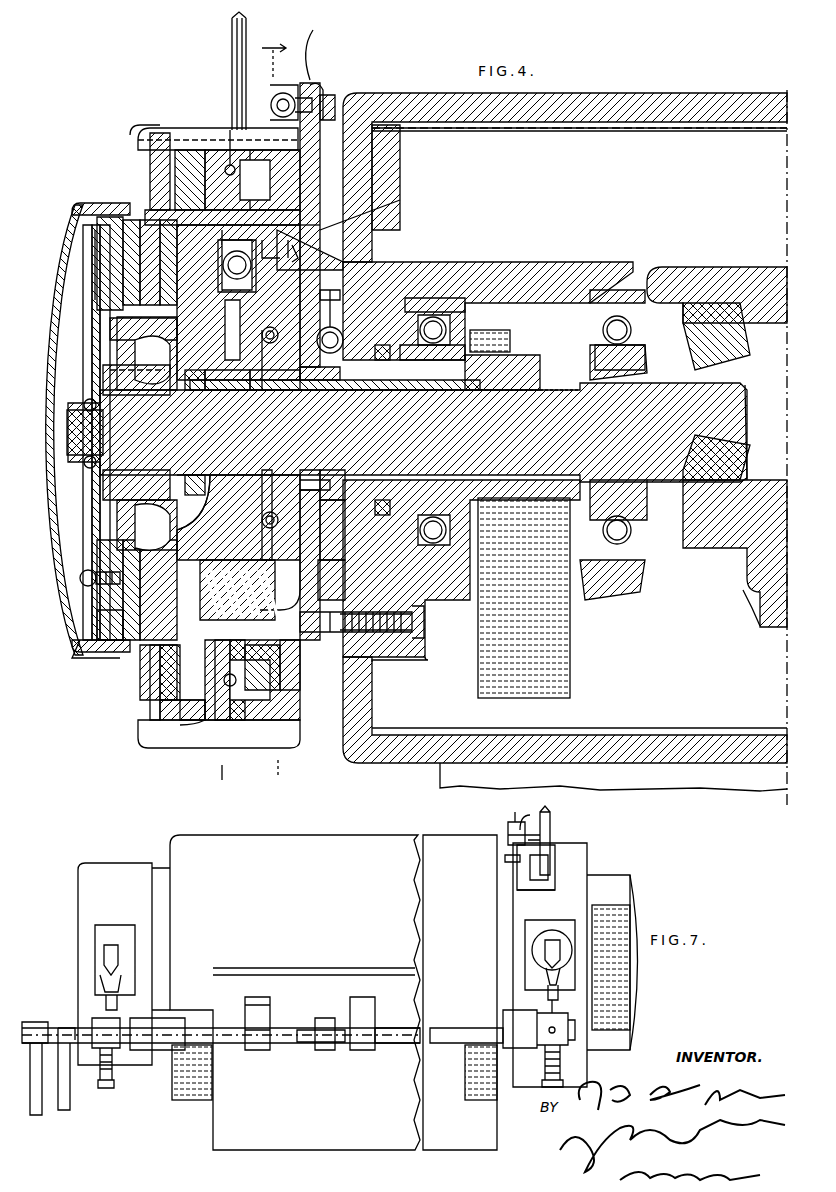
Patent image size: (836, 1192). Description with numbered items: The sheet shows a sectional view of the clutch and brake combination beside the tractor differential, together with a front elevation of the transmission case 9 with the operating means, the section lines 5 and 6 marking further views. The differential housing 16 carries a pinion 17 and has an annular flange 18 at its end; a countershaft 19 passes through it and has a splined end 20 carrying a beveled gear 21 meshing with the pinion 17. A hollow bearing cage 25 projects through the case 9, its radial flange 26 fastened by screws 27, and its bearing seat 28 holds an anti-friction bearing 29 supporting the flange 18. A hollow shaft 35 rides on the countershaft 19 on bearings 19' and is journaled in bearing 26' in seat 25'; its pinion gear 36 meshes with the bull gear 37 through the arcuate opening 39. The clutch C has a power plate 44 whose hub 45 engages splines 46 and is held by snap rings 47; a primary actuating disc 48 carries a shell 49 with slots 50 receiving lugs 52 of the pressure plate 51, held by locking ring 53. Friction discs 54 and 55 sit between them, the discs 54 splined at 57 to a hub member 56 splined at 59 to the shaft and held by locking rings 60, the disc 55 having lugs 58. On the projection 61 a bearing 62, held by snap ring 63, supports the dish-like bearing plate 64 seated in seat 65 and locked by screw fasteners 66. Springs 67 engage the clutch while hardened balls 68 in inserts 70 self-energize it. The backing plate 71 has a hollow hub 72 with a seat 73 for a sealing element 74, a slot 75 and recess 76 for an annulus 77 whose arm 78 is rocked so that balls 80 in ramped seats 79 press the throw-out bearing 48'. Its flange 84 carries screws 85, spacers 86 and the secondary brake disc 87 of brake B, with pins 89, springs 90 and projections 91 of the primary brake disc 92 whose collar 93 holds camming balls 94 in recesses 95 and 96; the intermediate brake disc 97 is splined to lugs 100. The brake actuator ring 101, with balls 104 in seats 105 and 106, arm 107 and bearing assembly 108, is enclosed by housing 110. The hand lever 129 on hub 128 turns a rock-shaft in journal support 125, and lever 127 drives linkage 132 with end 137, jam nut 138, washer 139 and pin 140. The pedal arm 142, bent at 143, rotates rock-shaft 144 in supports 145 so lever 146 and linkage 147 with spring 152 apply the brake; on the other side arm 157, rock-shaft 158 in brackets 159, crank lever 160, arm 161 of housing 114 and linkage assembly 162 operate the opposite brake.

In FIG. 4, the section line 5 is at (286, 780).
In FIG. 4, the section line 6 is at (228, 130).
In FIG. 4, the transmission case 9 is at (706, 784).
In FIG. 7, the transmission case 9 is at (215, 1127).
In FIG. 4, the differential housing 16 is at (716, 268).
In FIG. 4, the pinion 17 is at (755, 548).
In FIG. 4, the annular flange 18 is at (590, 365).
In FIG. 4, the countershaft 19 is at (407, 432).
In FIG. 4, the bearings 19' is at (366, 375).
In FIG. 4, the splined end 20 is at (747, 420).
In FIG. 4, the beveled gear 21 is at (718, 335).
In FIG. 4, the bearing cage 25 is at (488, 447).
In FIG. 4, the seat 25' is at (438, 263).
In FIG. 4, the radial flange 26 is at (398, 606).
In FIG. 4, the anti-friction bearing 26' is at (434, 290).
In FIG. 4, the screws 27 is at (412, 630).
In FIG. 4, the bearing seat 28 is at (603, 290).
In FIG. 4, the anti-friction bearing 29 is at (630, 290).
In FIG. 4, the hollow shaft 35 is at (428, 385).
In FIG. 4, the pinion gear 36 is at (525, 330).
In FIG. 4, the bull gear 37 is at (573, 626).
In FIG. 4, the arcuate opening 39 is at (592, 596).
In FIG. 4, the power plate 44 is at (222, 385).
In FIG. 4, the central hub 45 is at (278, 380).
In FIG. 4, the splines 46 is at (258, 398).
In FIG. 4, the snap rings 47 is at (194, 390).
In FIG. 4, the primary actuating disc 48 is at (346, 219).
In FIG. 4, the throw-out bearing 48' is at (266, 503).
In FIG. 4, the cylindrical shell 49 is at (300, 240).
In FIG. 4, the slots 50 is at (118, 215).
In FIG. 4, the pressure plate 51 is at (96, 624).
In FIG. 4, the lugs 52 is at (78, 210).
In FIG. 4, the locking ring 53 is at (90, 640).
In FIG. 4, the friction discs 54 is at (130, 230).
In FIG. 4, the friction disc 55 is at (150, 225).
In FIG. 4, the hub member 56 is at (120, 332).
In FIG. 4, the splines 57 is at (147, 433).
In FIG. 4, the lugs 58 is at (160, 660).
In FIG. 4, the splines 59 is at (145, 393).
In FIG. 4, the locking rings 60 is at (165, 478).
In FIG. 4, the axial projection 61 is at (68, 432).
In FIG. 4, the anti-friction bearing 62 is at (84, 404).
In FIG. 4, the snap ring 63 is at (80, 440).
In FIG. 4, the bearing plate 64 is at (90, 505).
In FIG. 4, the annular seat 65 is at (100, 283).
In FIG. 4, the screw fasteners 66 is at (80, 578).
In FIG. 4, the clutch-engaging springs 67 is at (239, 590).
In FIG. 4, the hardened balls 68 is at (237, 266).
In FIG. 4, the inserts 70 is at (218, 290).
In FIG. 4, the clutch release backing plate 71 is at (320, 575).
In FIG. 4, the hollow hub 72 is at (350, 480).
In FIG. 4, the seat 73 is at (412, 360).
In FIG. 4, the sealing element 74 is at (380, 360).
In FIG. 4, the slot 75 is at (345, 230).
In FIG. 4, the circular recess 76 is at (338, 530).
In FIG. 4, the annulus 77 is at (312, 478).
In FIG. 4, the arm 78 is at (280, 84).
In FIG. 7, the arm 78 is at (508, 830).
In FIG. 4, the ramped seats 79 is at (326, 310).
In FIG. 4, the hardened balls 80 is at (136, 754).
In FIG. 4, the flange 84 is at (325, 720).
In FIG. 4, the screws 85 is at (140, 146).
In FIG. 4, the cylindrical spacers 86 is at (195, 140).
In FIG. 4, the secondary brake disc 87 is at (155, 700).
In FIG. 4, the spring-centering pin 89 is at (190, 722).
In FIG. 4, the coiled springs 90 is at (210, 720).
In FIG. 4, the radial projections 91 is at (222, 728).
In FIG. 4, the primary brake disc 92 is at (240, 725).
In FIG. 4, the collar 93 is at (252, 180).
In FIG. 4, the camming balls 94 is at (350, 175).
In FIG. 4, the recesses 95 is at (258, 667).
In FIG. 4, the recesses 96 is at (305, 690).
In FIG. 4, the intermediate brake disc 97 is at (170, 678).
In FIG. 4, the lugs 100 is at (222, 223).
In FIG. 4, the brake actuator ring 101 is at (255, 150).
In FIG. 4, the brake-actuating balls 104 is at (388, 136).
In FIG. 4, the ramped seat 105 is at (372, 150).
In FIG. 4, the ramped seat 106 is at (330, 130).
In FIG. 7, the arm 107 is at (545, 950).
In FIG. 4, the ball bearing assembly 108 is at (230, 165).
In FIG. 4, the housing 110 is at (96, 318).
In FIG. 7, the housing 110 is at (637, 980).
In FIG. 7, the housing 114 is at (115, 870).
In FIG. 7, the journal support 125 is at (530, 888).
In FIG. 7, the lever 127 is at (512, 862).
In FIG. 7, the hub 128 is at (556, 865).
In FIG. 4, the hand lever 129 is at (232, 22).
In FIG. 7, the hand lever 129 is at (552, 820).
In FIG. 7, the linkage 132 is at (528, 825).
In FIG. 4, the bent end 137 is at (328, 95).
In FIG. 4, the jam nut 138 is at (288, 93).
In FIG. 4, the washer 139 is at (313, 35).
In FIG. 4, the pin 140 is at (324, 88).
In FIG. 7, the arm 142 is at (68, 1110).
In FIG. 7, the bent portion 143 is at (300, 1043).
In FIG. 7, the rock-shaft 144 is at (392, 1043).
In FIG. 7, the supports 145 is at (360, 1050).
In FIG. 7, the lever 146 is at (570, 1015).
In FIG. 7, the adjustable linkage 147 is at (560, 975).
In FIG. 7, the coiled spring 152 is at (563, 1065).
In FIG. 7, the arm 157 is at (42, 1118).
In FIG. 7, the rock-shaft 158 is at (228, 1043).
In FIG. 7, the brackets 159 is at (272, 1012).
In FIG. 7, the crank lever 160 is at (92, 1022).
In FIG. 7, the arm 161 is at (106, 945).
In FIG. 7, the linkage assembly 162 is at (100, 983).
In FIG. 4, the brake assembly B is at (190, 140).
In FIG. 4, the clutch means C is at (99, 267).